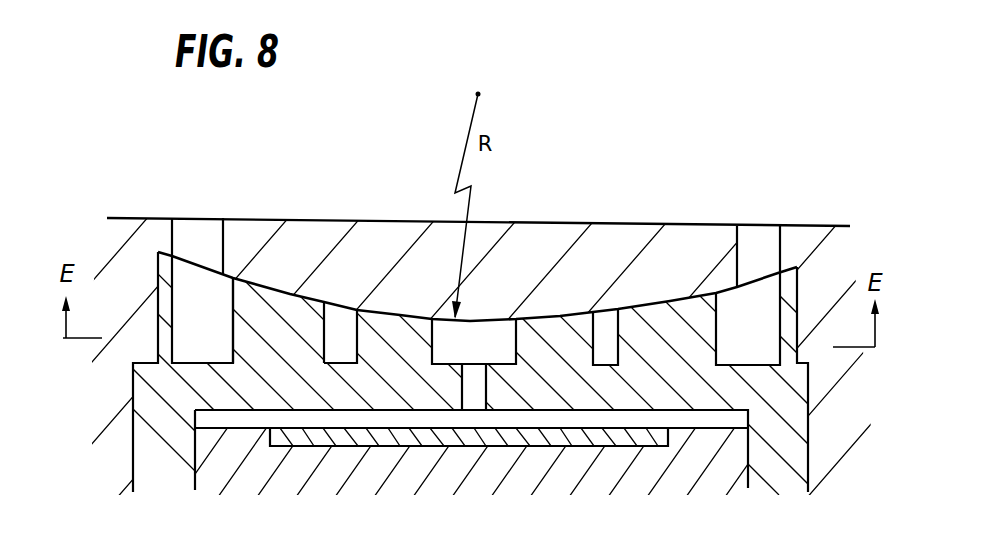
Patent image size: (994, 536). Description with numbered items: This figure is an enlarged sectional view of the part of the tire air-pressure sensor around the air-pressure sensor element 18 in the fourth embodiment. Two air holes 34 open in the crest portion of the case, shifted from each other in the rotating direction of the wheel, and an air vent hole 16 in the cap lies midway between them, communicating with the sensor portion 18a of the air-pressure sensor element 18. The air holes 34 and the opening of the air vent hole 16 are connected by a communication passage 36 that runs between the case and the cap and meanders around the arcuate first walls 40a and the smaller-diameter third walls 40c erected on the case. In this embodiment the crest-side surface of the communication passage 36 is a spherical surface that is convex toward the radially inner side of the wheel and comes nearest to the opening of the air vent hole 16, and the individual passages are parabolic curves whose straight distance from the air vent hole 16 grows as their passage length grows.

The air hole 34 is at (203, 238).
The communication passage 36 is at (605, 330).
The first wall 40a is at (285, 325).
The third wall 40c is at (398, 330).
The air vent hole 16 is at (473, 400).
The air-pressure sensor element 18 is at (636, 485).
The sensor portion 18a is at (553, 448).